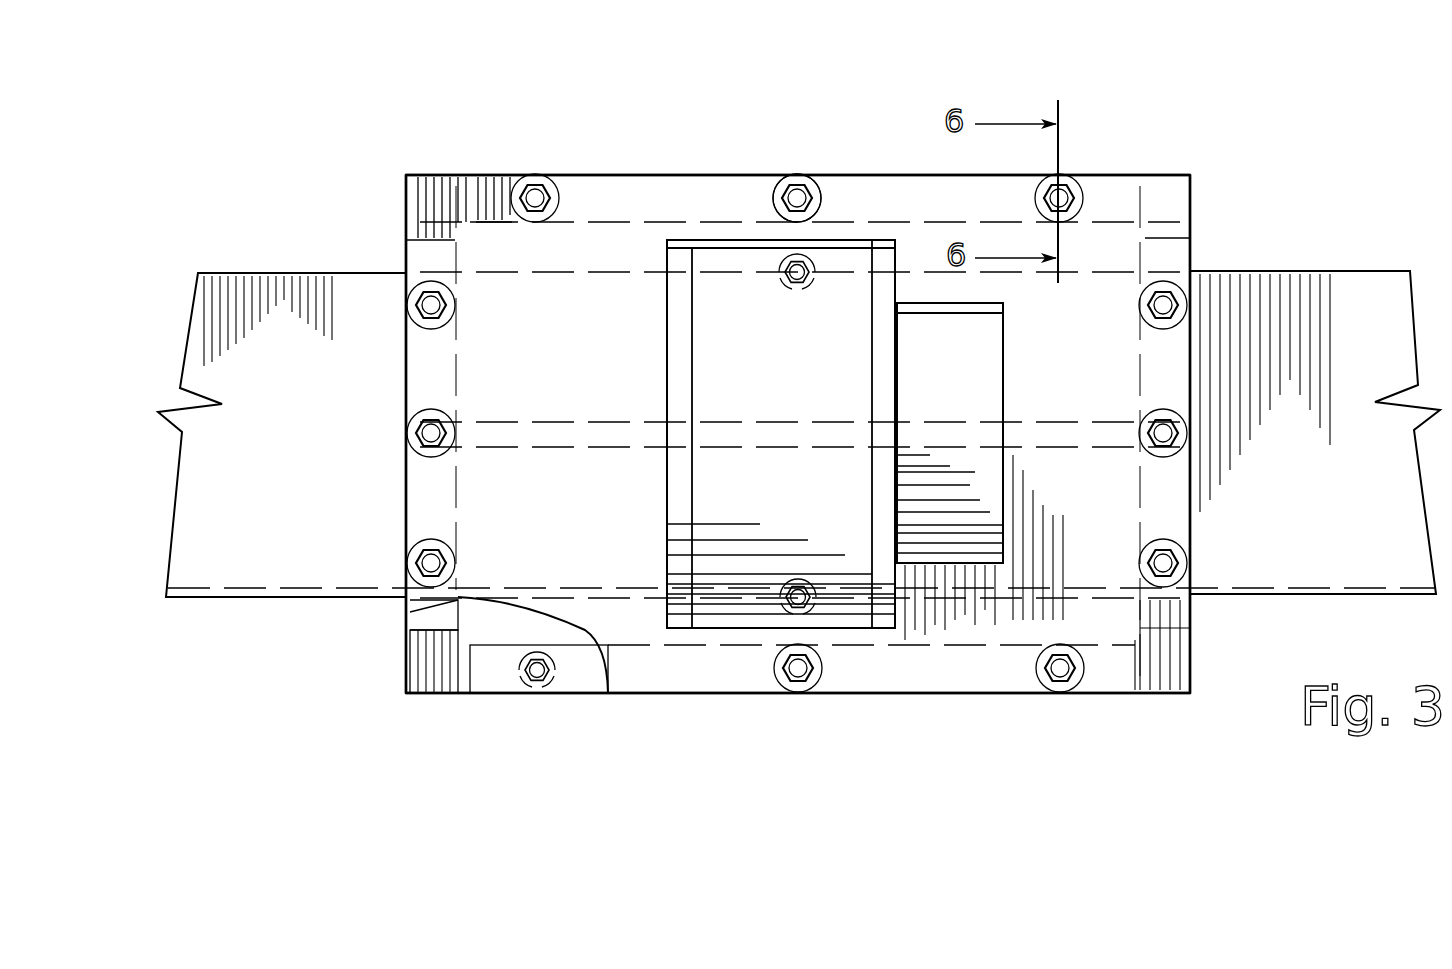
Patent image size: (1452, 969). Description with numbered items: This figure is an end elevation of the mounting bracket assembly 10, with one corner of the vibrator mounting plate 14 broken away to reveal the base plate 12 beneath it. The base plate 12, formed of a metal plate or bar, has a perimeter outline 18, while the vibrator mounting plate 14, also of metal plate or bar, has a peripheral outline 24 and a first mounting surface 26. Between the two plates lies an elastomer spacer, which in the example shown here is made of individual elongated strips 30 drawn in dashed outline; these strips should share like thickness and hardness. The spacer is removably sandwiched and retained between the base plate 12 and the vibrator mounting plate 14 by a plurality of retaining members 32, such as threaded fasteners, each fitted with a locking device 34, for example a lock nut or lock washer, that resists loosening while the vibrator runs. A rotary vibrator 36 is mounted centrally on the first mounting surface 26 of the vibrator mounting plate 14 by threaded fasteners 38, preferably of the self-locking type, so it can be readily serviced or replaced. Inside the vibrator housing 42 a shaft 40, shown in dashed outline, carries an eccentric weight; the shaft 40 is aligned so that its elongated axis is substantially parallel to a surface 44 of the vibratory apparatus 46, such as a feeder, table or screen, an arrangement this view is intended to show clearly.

The mounting bracket assembly 10 is at (1222, 146).
The base plate 12 is at (406, 670).
The vibrator mounting plate 14 is at (900, 175).
The perimeter outline 18 is at (413, 695).
The peripheral outline 24 is at (845, 175).
The first mounting surface 26 is at (598, 489).
The individual elongated strips 30 is at (604, 200).
The retaining members 32 is at (512, 167).
The locking device 34 is at (780, 180).
The rotary vibrator 36 is at (1013, 378).
The threaded fasteners 38 is at (783, 262).
The shaft 40 is at (740, 422).
The vibrator housing 42 is at (838, 600).
The surface 44 is at (232, 590).
The vibratory apparatus 46 is at (295, 270).